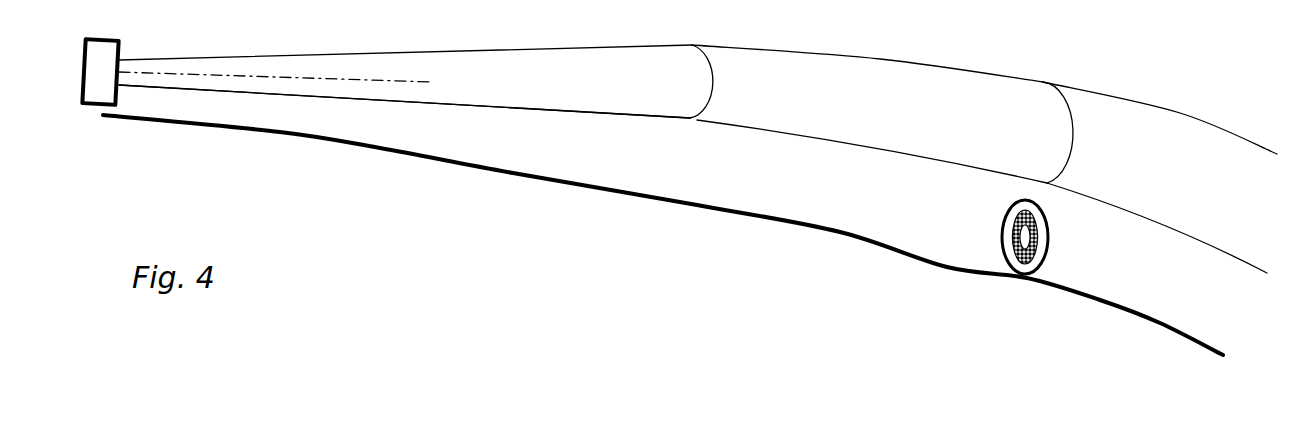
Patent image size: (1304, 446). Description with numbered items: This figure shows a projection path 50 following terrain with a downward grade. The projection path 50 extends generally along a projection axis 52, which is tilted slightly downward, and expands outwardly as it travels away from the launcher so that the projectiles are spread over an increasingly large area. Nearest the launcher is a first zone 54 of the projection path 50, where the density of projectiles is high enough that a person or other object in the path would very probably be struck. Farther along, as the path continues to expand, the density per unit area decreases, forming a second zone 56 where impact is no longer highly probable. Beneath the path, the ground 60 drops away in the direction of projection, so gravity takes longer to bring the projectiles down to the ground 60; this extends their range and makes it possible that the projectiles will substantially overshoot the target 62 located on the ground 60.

The projection path 50 is at (518, 107).
The projection axis 52 is at (387, 85).
The first zone 54 is at (416, 81).
The second zone 56 is at (984, 159).
The ground 60 is at (840, 233).
The target 62 is at (1030, 262).